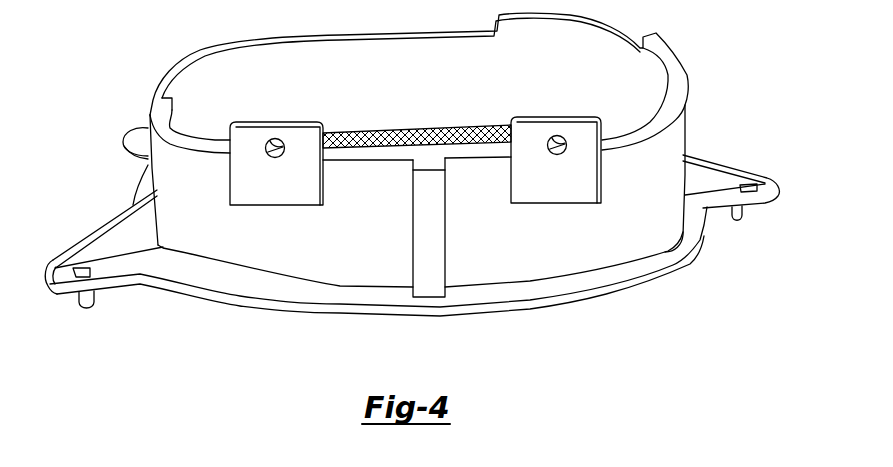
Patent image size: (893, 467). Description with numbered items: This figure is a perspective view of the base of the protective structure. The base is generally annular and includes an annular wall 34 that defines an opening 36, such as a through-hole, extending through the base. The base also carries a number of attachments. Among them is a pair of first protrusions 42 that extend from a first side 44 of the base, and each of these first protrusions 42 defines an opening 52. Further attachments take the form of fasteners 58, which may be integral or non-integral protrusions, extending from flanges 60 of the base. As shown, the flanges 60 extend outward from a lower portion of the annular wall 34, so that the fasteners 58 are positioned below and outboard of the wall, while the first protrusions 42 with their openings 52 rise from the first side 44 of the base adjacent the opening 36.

The annular wall 34 is at (627, 248).
The opening 36 is at (464, 102).
The first protrusions 42 is at (305, 175).
The first side 44 is at (458, 326).
The openings 52 is at (273, 157).
The fasteners 58 is at (88, 309).
The flanges 60 is at (54, 259).